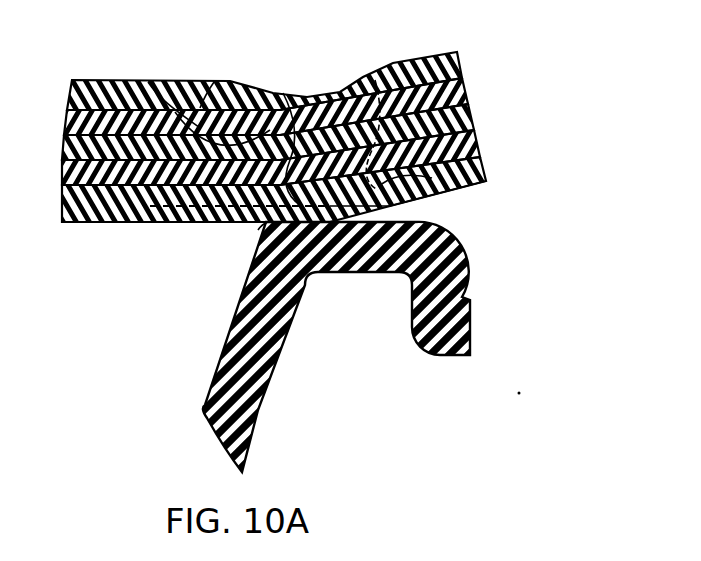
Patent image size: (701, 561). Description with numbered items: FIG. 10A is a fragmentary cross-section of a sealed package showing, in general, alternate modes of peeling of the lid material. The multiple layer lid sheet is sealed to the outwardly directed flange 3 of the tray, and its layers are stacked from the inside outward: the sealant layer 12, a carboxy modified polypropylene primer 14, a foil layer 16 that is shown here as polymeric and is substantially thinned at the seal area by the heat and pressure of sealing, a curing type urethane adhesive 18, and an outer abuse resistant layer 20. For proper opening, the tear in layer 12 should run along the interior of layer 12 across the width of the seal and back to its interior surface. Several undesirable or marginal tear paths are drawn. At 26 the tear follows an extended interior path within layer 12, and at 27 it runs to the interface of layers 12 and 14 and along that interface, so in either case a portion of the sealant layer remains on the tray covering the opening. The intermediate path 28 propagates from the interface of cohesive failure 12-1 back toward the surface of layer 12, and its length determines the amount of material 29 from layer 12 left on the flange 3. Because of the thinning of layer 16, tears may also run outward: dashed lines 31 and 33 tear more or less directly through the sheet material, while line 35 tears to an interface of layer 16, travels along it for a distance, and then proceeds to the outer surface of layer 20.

The flange 3 is at (370, 273).
The sealant layer 12 is at (484, 172).
The interface of cohesive failure 12-1 is at (395, 206).
The carboxy modified polypropylene primer 14 is at (478, 143).
The metal foil layer 16 is at (471, 121).
The curing type urethane adhesive 18 is at (465, 97).
The abuse resistant layer 20 is at (459, 64).
The extended interior tear path 26 is at (177, 206).
The interface tear path 27 is at (235, 222).
The extended tear path 28 is at (285, 218).
The residual sealant material 29 is at (258, 245).
The through-tear path 31 is at (375, 80).
The through-tear path 33 is at (283, 93).
The interface tear path 35 is at (148, 82).